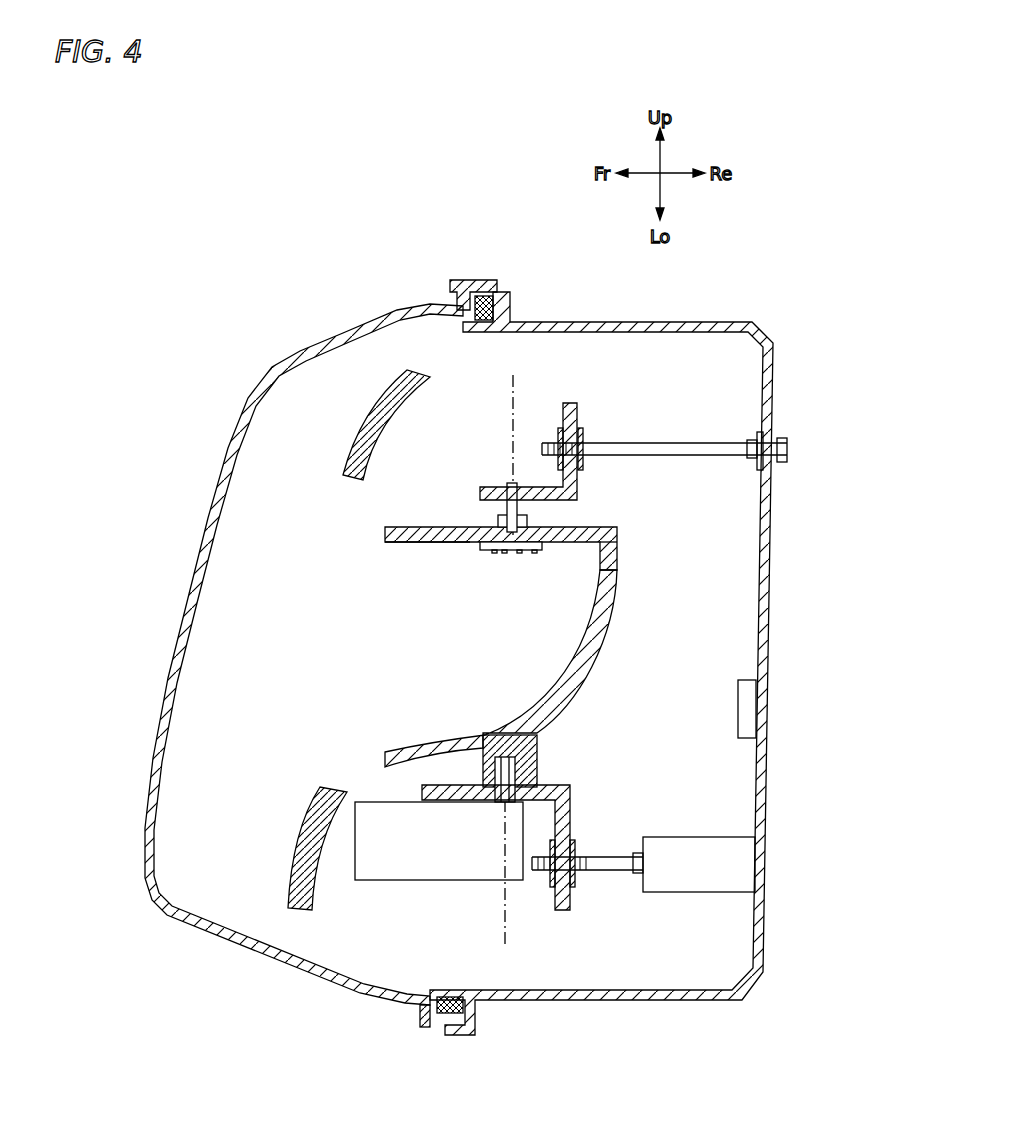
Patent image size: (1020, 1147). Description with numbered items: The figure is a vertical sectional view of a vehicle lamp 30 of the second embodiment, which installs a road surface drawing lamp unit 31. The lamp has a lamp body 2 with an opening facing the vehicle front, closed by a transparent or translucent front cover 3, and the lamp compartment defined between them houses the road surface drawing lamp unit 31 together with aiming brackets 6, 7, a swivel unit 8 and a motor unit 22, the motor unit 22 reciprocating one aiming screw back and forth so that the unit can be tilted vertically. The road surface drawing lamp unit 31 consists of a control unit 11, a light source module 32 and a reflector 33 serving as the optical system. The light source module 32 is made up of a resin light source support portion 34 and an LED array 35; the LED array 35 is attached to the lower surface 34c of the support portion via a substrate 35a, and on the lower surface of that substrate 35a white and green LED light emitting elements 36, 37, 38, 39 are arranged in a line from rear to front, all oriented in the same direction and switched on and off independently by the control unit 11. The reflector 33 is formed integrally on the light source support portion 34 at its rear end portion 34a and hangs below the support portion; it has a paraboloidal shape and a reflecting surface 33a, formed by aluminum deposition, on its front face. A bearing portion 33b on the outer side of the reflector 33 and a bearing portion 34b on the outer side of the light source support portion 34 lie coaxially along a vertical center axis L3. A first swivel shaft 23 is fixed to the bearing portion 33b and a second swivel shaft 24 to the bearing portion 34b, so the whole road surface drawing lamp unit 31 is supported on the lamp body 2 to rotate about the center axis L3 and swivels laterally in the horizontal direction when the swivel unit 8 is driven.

The lamp body 2 is at (705, 322).
The front cover 3 is at (343, 336).
The aiming bracket 6 is at (572, 820).
The aiming bracket 7 is at (577, 485).
The swivel unit 8 is at (425, 880).
The control unit 11 is at (750, 710).
The motor unit 22 is at (705, 845).
The first swivel shaft 23 is at (512, 772).
The second swivel shaft 24 is at (507, 487).
The vehicle lamp 30 is at (333, 195).
The road surface drawing lamp unit 31 is at (298, 572).
The light source module 32 is at (501, 520).
The reflector 33 is at (477, 760).
The reflecting surface 33a is at (505, 710).
The bearing portion 33b is at (497, 800).
The light source support portion 34 is at (430, 527).
The rear end portion 34a is at (618, 538).
The bearing portion 34b is at (522, 520).
The lower surface 34c is at (395, 545).
The LED array 35 is at (567, 530).
The substrate 35a is at (487, 546).
The LED light emitting element 36 is at (534, 553).
The LED light emitting element 37 is at (519, 553).
The LED light emitting element 38 is at (504, 553).
The LED light emitting element 39 is at (494, 553).
The center axis L3 is at (518, 379).